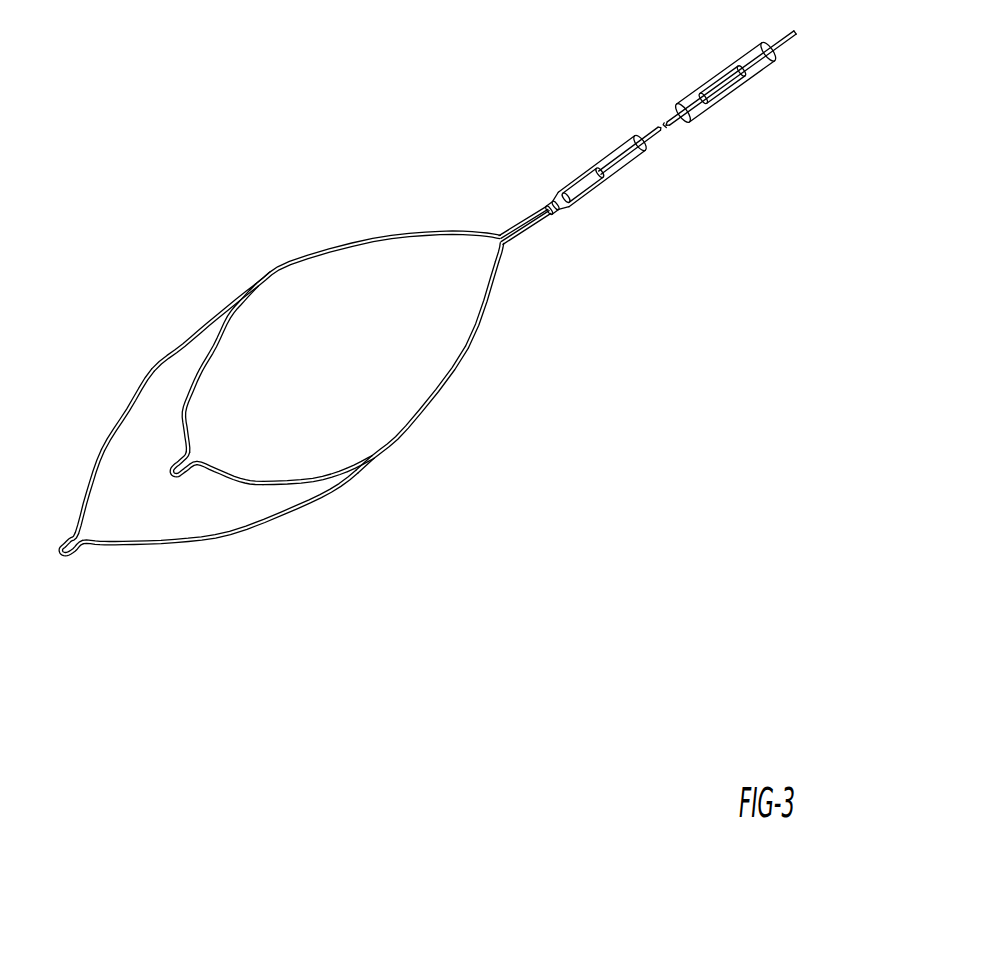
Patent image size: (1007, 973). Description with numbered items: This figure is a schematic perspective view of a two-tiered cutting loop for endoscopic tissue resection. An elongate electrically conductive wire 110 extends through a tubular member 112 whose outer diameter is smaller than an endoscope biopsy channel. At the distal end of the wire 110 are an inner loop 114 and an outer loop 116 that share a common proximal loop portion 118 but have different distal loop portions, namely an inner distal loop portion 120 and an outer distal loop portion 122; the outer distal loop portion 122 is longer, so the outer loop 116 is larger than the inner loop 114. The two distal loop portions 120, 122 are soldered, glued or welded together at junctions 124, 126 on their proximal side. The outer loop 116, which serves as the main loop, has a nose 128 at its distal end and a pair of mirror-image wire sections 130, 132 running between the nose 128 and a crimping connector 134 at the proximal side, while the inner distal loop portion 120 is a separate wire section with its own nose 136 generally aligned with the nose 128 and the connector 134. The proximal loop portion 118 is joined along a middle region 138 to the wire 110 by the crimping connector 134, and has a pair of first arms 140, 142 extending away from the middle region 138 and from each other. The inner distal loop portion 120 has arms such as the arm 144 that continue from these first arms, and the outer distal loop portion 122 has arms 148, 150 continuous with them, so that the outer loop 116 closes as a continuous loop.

The elongate electrically conductive wire 110 is at (672, 129).
The tubular member 112 is at (617, 148).
The inner loop 114 is at (192, 344).
The outer loop 116 is at (153, 366).
The proximal loop portion 118 is at (440, 239).
The inner distal loop portion 120 is at (267, 479).
The outer distal loop portion 122 is at (322, 505).
The junction 124 is at (253, 283).
The junction 126 is at (373, 458).
The nose 128 is at (173, 466).
The wire section 130 is at (228, 316).
The wire section 132 is at (353, 476).
The crimping connector 134 is at (577, 191).
The nose 136 is at (74, 538).
The middle region 138 is at (513, 224).
The first arm 140 is at (352, 241).
The first arm 142 is at (471, 342).
The arm 144 is at (184, 406).
The arm 148 is at (102, 450).
The arm 150 is at (240, 533).